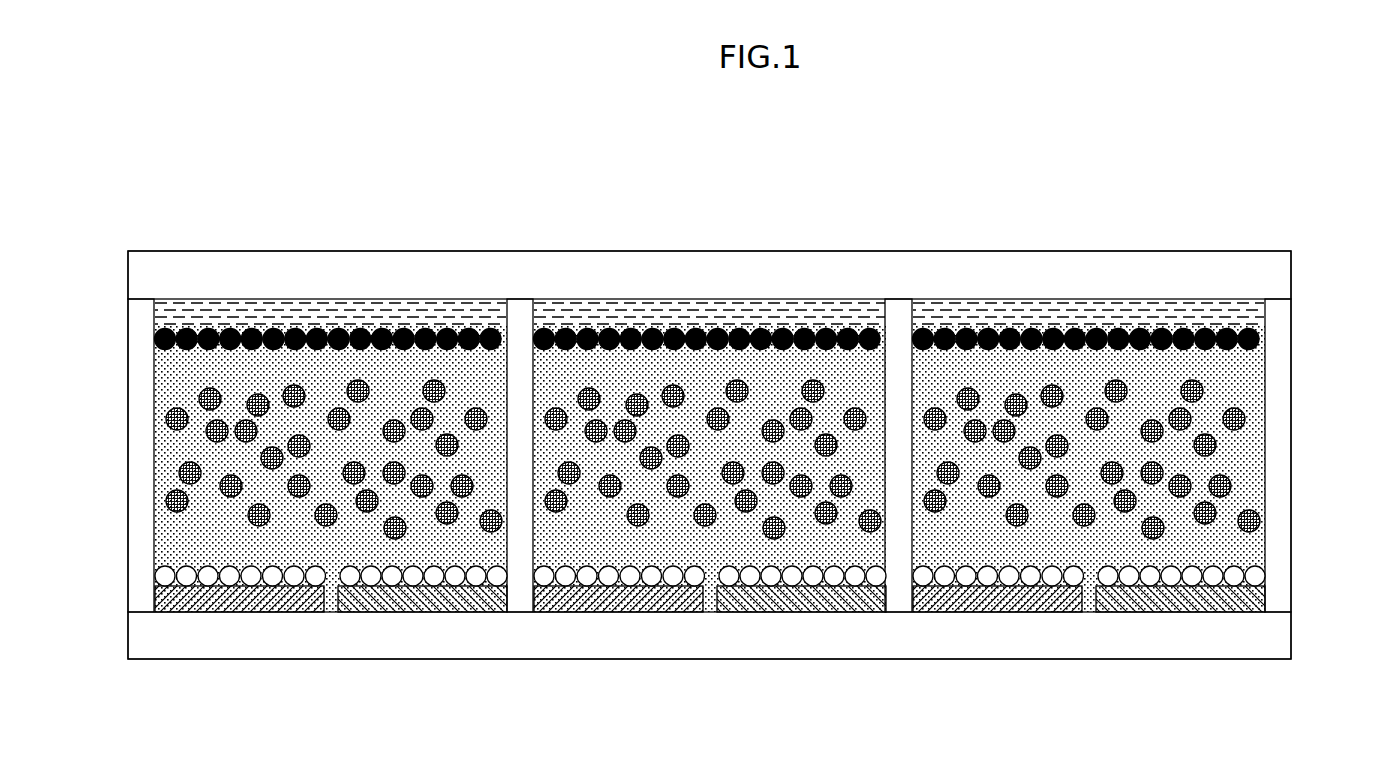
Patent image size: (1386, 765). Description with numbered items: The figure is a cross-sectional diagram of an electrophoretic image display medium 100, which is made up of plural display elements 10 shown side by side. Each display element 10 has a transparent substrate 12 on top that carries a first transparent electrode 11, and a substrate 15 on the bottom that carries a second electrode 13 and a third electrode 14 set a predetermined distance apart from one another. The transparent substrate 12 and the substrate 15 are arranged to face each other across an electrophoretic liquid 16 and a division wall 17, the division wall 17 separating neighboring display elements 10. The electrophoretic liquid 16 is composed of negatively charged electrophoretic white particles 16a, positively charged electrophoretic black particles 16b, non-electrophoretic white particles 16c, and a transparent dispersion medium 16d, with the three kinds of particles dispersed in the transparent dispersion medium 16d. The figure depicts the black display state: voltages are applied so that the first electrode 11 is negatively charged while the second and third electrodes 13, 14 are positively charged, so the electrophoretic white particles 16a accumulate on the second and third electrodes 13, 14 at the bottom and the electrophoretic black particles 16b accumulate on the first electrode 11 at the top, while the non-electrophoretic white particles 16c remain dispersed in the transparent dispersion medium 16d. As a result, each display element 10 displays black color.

The image display medium 100 is at (750, 410).
The display element 10 is at (366, 243).
The first transparent electrode 11 is at (1088, 290).
The transparent substrate 12 is at (1283, 262).
The second electrode 13 is at (990, 604).
The third electrode 14 is at (1172, 604).
The substrate 15 is at (1283, 626).
The electrophoretic liquid 16 is at (764, 455).
The negatively charged electrophoretic white particles 16a is at (1250, 564).
The positively charged electrophoretic black particles 16b is at (1258, 325).
The non-electrophoretic white particles 16c is at (1212, 470).
The transparent dispersion medium 16d is at (1237, 371).
The division wall 17 is at (1283, 527).